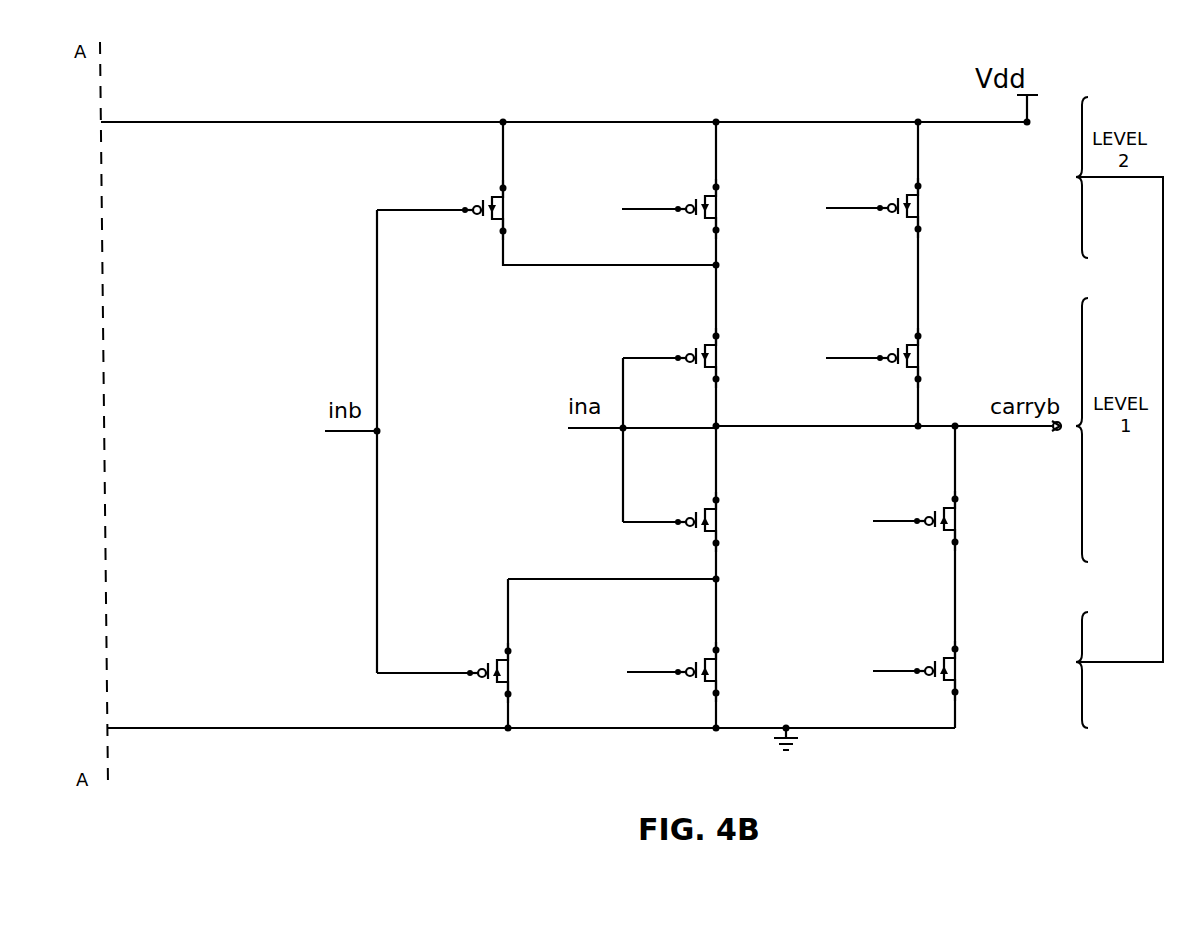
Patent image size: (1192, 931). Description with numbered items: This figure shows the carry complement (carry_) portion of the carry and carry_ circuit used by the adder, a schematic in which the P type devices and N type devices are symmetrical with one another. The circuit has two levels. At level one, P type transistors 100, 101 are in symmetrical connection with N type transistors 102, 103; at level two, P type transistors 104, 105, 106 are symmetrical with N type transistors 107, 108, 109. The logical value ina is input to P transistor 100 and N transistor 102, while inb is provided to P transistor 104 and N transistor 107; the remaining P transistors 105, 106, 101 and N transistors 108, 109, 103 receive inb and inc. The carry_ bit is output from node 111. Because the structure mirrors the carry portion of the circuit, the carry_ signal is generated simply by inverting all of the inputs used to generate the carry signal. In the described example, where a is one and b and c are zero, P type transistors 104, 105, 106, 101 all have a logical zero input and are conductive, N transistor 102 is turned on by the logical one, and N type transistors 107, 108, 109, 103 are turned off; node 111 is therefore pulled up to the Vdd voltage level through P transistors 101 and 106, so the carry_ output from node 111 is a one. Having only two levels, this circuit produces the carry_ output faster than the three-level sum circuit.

The P type transistor 100 is at (685, 322).
The P type transistor 101 is at (888, 322).
The N type transistor 102 is at (686, 488).
The N type transistor 103 is at (922, 486).
The P type transistor 104 is at (472, 222).
The P type transistor 105 is at (681, 172).
The P type transistor 106 is at (886, 170).
The N type transistor 107 is at (479, 636).
The N type transistor 108 is at (687, 634).
The N type transistor 109 is at (924, 632).
The node 111 is at (1018, 430).